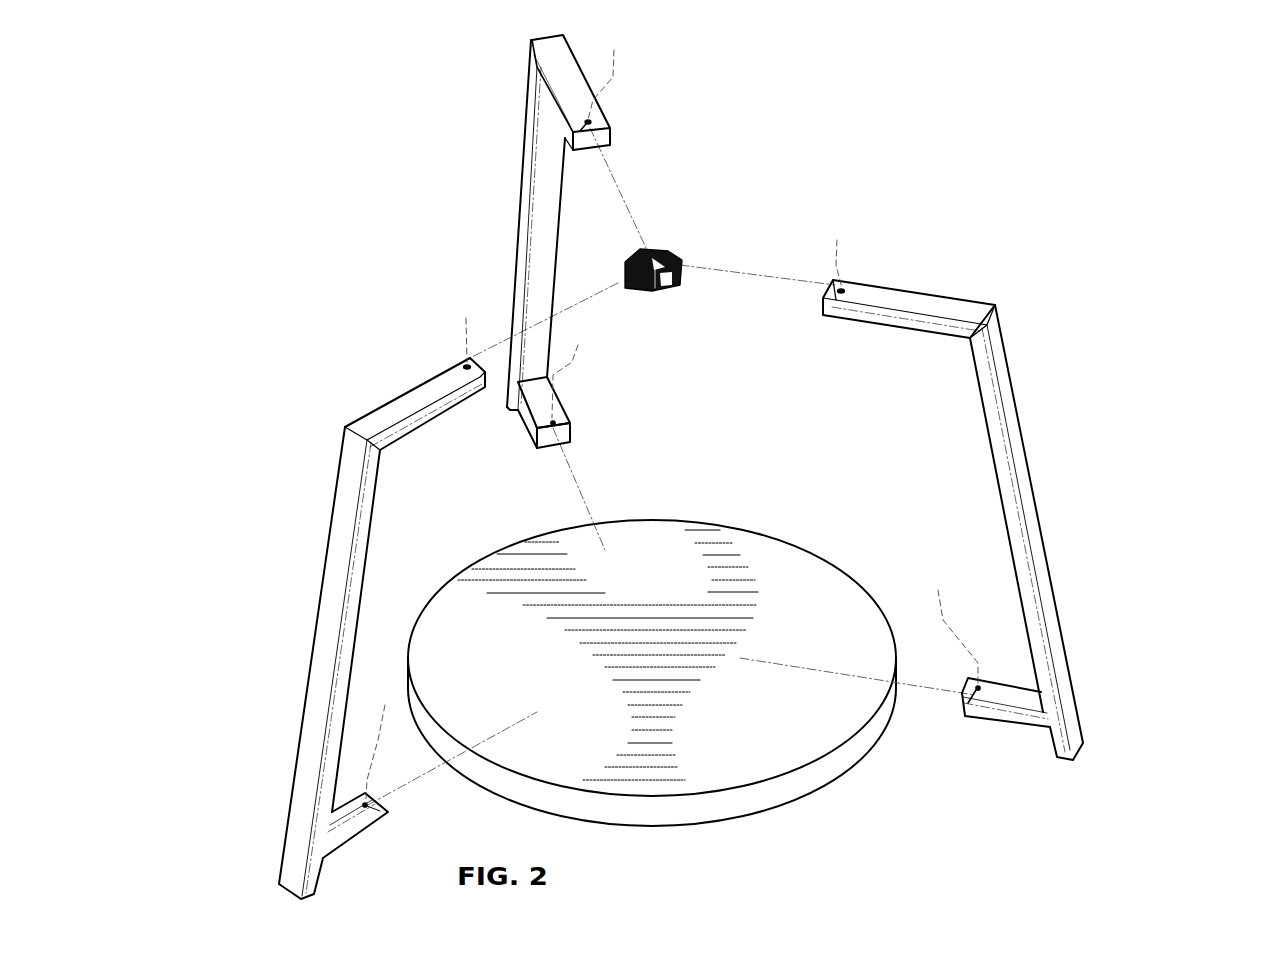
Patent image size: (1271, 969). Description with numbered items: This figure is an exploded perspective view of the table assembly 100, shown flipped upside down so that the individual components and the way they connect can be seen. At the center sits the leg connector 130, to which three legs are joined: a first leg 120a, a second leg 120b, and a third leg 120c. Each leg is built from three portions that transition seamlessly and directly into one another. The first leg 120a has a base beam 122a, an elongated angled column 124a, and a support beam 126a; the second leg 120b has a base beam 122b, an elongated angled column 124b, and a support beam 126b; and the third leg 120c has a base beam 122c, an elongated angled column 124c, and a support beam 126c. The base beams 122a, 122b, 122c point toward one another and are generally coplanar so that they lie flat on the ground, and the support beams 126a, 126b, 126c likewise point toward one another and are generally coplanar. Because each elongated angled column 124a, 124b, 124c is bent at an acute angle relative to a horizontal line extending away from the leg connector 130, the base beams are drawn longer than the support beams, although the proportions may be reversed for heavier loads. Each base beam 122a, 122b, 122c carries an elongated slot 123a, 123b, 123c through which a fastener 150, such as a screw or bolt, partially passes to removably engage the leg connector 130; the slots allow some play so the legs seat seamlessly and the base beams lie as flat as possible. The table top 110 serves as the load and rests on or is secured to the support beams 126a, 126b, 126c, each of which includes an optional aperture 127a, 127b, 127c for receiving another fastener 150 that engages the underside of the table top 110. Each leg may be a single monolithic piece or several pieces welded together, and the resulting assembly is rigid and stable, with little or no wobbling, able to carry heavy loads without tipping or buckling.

The table assembly 100 is at (1132, 102).
The table top 110 is at (718, 774).
The first leg 120a is at (507, 157).
The second leg 120b is at (325, 441).
The third leg 120c is at (1022, 303).
The base beam 122a is at (570, 82).
The base beam 122b is at (410, 400).
The base beam 122c is at (923, 305).
The elongated slot 123a is at (606, 124).
The elongated slot 123b is at (455, 353).
The elongated slot 123c is at (848, 283).
The elongated angled column 124a is at (548, 221).
The elongated angled column 124b is at (322, 718).
The elongated angled column 124c is at (1005, 422).
The support beam 126a is at (540, 403).
The support beam 126b is at (360, 827).
The support beam 126c is at (1016, 698).
The aperture 127a is at (567, 420).
The aperture 127b is at (388, 814).
The aperture 127c is at (976, 691).
The leg connector 130 is at (656, 259).
The fastener 150 is at (614, 45).